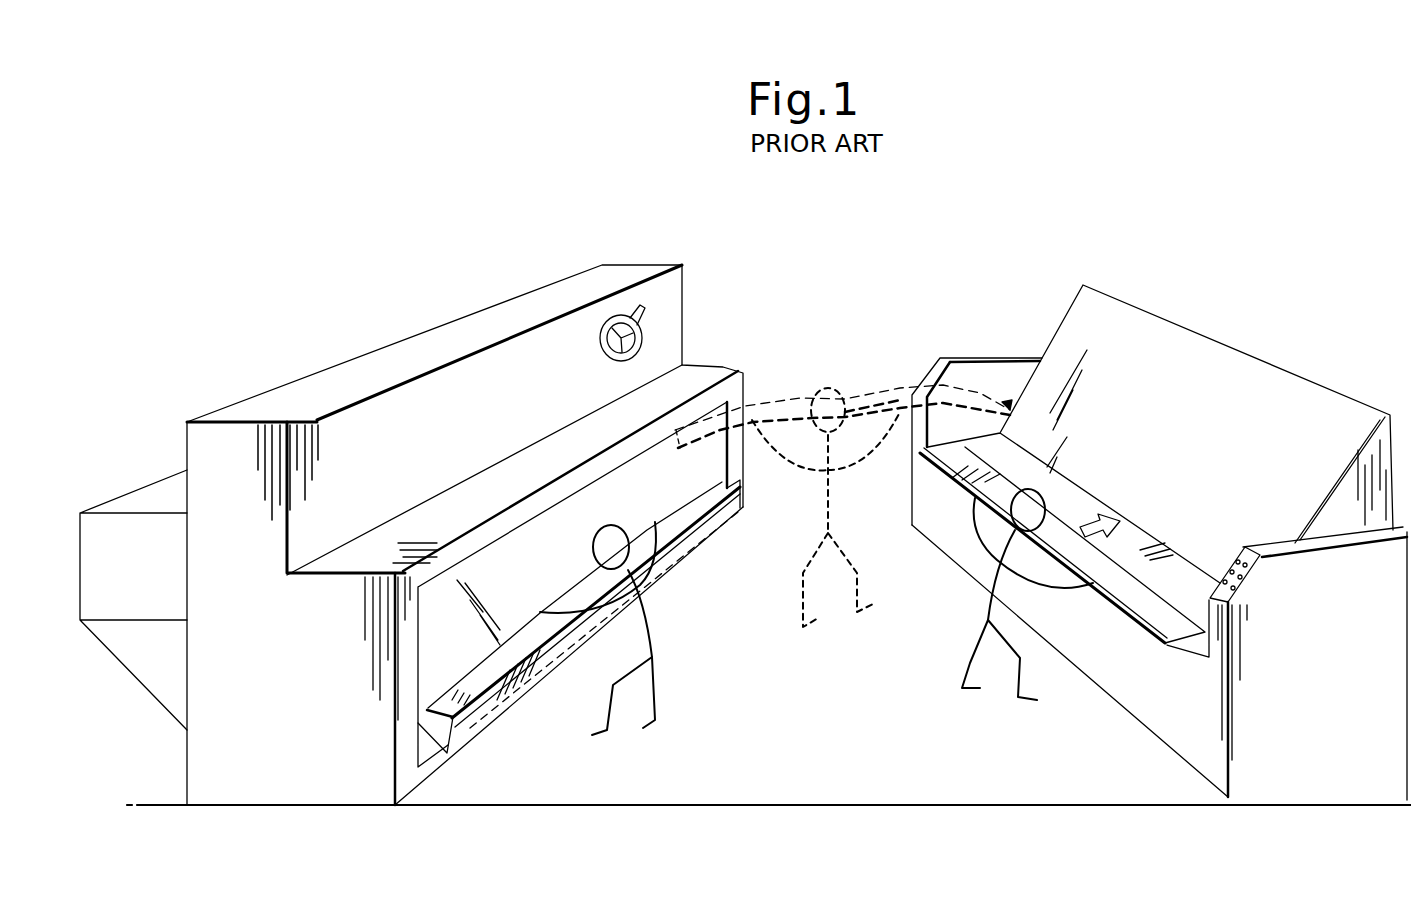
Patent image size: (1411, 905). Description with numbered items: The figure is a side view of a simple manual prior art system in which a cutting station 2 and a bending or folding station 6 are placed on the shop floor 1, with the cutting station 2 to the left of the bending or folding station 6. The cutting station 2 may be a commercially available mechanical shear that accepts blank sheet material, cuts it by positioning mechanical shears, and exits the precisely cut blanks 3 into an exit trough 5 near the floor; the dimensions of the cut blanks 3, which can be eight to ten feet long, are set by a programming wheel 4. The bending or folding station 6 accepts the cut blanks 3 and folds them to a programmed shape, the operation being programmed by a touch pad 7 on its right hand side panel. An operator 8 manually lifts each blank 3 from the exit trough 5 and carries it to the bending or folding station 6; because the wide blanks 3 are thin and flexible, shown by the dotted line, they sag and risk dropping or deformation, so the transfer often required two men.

The shop floor 1 is at (813, 805).
The cutting station 2 is at (422, 322).
The cut blanks 3 is at (662, 527).
The programming wheel 4 is at (643, 333).
The exit trough 5 is at (463, 728).
The bending or folding station 6 is at (1120, 722).
The touch pad 7 is at (1240, 580).
The operator 8 is at (652, 617).